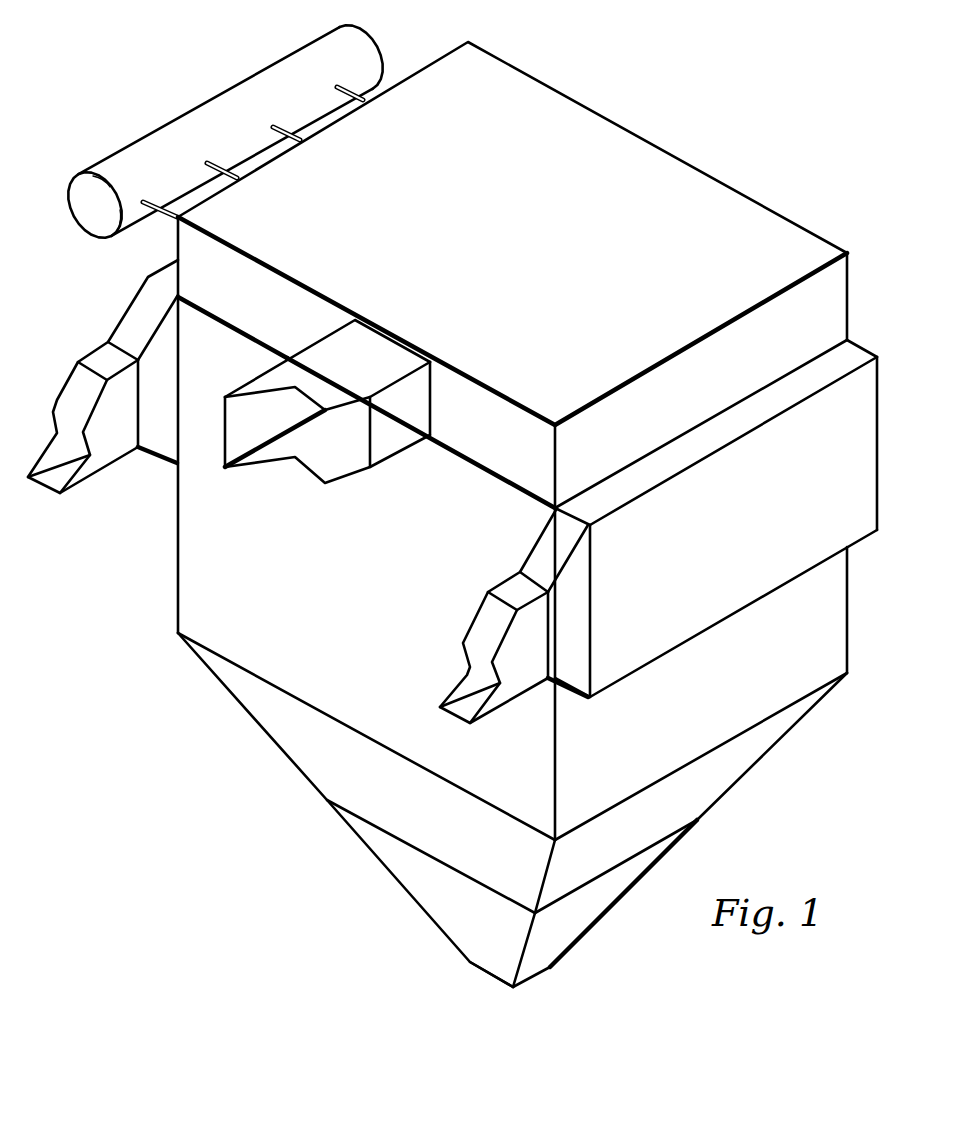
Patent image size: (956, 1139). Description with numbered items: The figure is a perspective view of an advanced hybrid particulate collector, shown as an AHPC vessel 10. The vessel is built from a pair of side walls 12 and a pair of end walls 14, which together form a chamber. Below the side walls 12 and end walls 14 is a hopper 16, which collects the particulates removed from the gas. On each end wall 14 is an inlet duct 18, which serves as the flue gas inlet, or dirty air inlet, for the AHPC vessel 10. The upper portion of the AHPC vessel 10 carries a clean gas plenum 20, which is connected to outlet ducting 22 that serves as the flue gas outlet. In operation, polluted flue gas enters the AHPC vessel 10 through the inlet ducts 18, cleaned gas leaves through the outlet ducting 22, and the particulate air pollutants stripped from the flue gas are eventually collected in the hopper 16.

The AHPC vessel 10 is at (468, 506).
The side wall 12 is at (190, 577).
The end wall 14 is at (817, 636).
The hopper 16 is at (272, 722).
The inlet duct 18 is at (58, 407).
The clean gas plenum 20 is at (707, 369).
The outlet ducting 22 is at (237, 443).